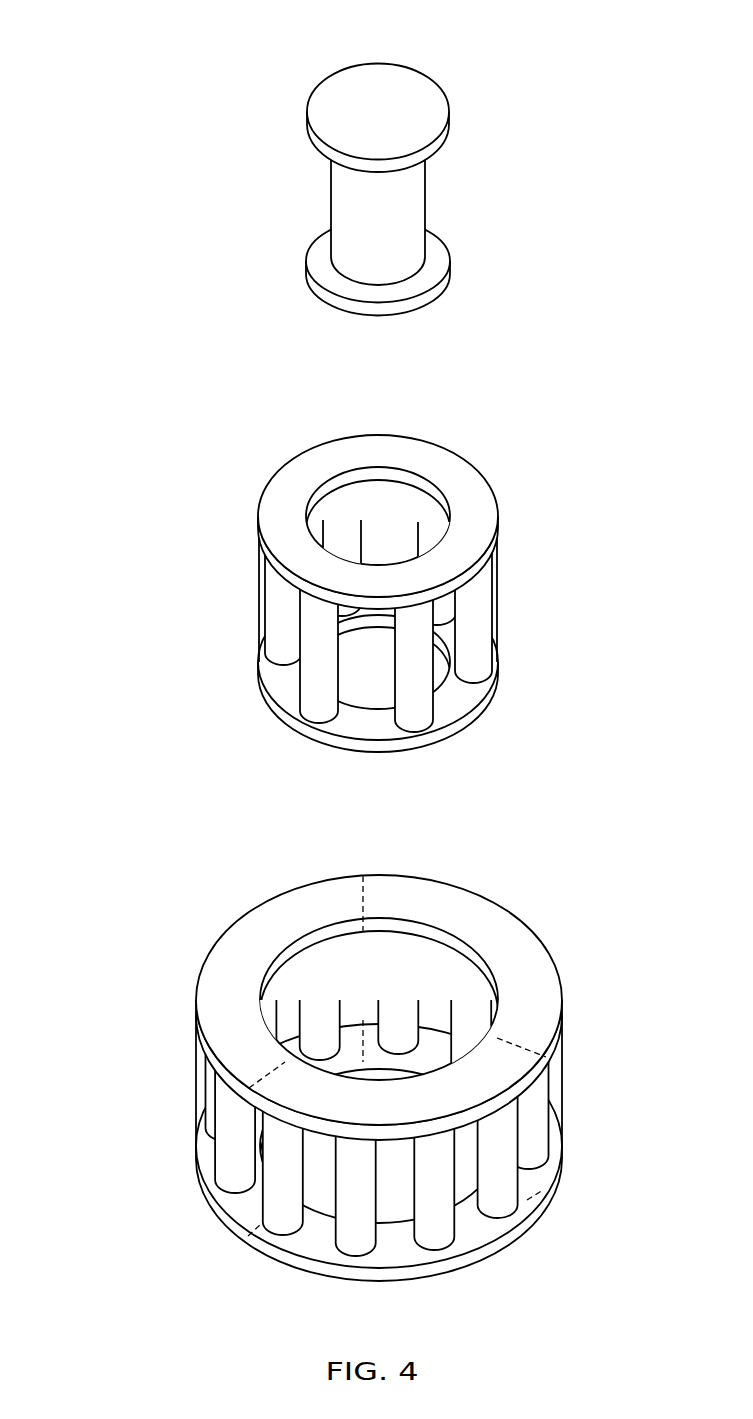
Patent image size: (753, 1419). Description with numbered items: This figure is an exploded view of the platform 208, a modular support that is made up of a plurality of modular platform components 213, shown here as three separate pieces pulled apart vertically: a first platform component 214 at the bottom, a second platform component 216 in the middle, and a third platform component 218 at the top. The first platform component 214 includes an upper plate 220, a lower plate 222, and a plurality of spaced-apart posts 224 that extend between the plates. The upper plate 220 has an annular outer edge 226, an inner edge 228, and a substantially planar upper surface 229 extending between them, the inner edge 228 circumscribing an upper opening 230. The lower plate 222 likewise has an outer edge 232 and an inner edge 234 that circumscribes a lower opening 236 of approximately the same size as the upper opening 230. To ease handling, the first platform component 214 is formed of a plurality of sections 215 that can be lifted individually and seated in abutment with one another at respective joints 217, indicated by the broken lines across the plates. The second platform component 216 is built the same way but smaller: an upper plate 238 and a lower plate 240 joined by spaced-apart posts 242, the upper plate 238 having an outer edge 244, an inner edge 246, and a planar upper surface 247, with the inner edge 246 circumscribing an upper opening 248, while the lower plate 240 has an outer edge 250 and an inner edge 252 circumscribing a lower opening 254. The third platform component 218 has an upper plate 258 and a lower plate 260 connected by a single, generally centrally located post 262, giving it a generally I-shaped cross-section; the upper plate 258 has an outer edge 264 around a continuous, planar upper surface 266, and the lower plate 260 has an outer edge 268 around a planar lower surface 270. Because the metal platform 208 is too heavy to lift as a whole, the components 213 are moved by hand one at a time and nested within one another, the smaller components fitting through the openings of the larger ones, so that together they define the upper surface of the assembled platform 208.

The platform 208 is at (611, 360).
The modular platform components 213 is at (190, 150).
The first platform component 214 is at (580, 897).
The sections 215 is at (237, 1038).
The second platform component 216 is at (471, 437).
The joints 217 is at (277, 1097).
The third platform component 218 is at (448, 72).
The upper plate 220 is at (211, 940).
The lower plate 222 is at (204, 1211).
The spaced-apart posts 224 is at (232, 1145).
The outer edge 226 is at (568, 992).
The inner edge 228 is at (500, 976).
The upper surface 229 is at (290, 912).
The upper opening 230 is at (441, 960).
The outer edge 232 is at (483, 1247).
The inner edge 234 is at (483, 1222).
The lower opening 236 is at (393, 1205).
The upper plate 238 is at (263, 466).
The lower plate 240 is at (268, 719).
The spaced-apart posts 242 is at (278, 607).
The outer edge 244 is at (498, 508).
The inner edge 246 is at (448, 531).
The upper surface 247 is at (330, 455).
The upper opening 248 is at (401, 500).
The outer edge 250 is at (479, 719).
The inner edge 252 is at (488, 688).
The lower opening 254 is at (372, 684).
The upper plate 258 is at (317, 80).
The lower plate 260 is at (312, 294).
The post 262 is at (332, 192).
The outer edge 264 is at (451, 104).
The upper surface 266 is at (385, 77).
The outer edge 268 is at (447, 292).
The lower surface 270 is at (419, 311).